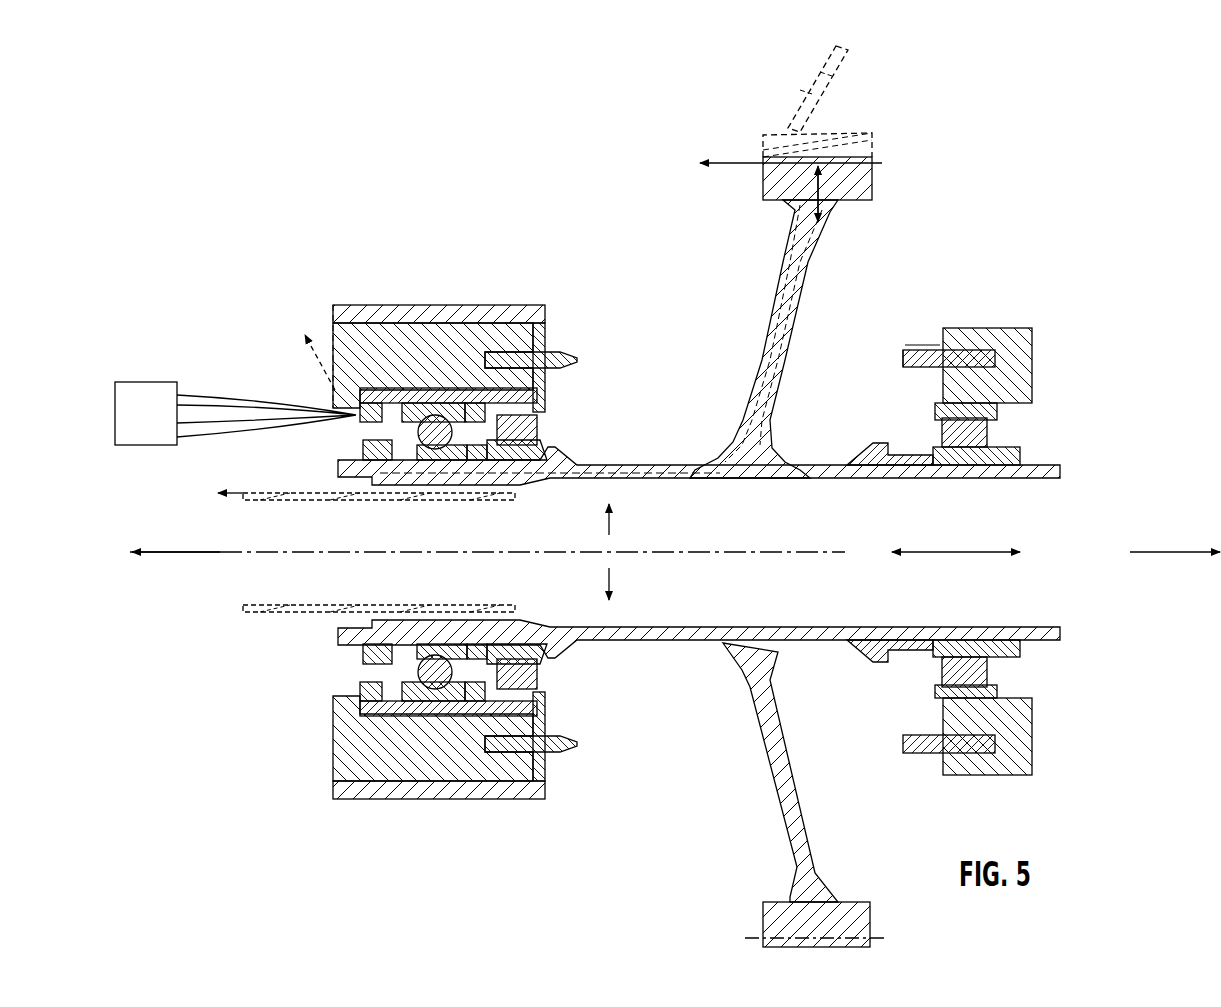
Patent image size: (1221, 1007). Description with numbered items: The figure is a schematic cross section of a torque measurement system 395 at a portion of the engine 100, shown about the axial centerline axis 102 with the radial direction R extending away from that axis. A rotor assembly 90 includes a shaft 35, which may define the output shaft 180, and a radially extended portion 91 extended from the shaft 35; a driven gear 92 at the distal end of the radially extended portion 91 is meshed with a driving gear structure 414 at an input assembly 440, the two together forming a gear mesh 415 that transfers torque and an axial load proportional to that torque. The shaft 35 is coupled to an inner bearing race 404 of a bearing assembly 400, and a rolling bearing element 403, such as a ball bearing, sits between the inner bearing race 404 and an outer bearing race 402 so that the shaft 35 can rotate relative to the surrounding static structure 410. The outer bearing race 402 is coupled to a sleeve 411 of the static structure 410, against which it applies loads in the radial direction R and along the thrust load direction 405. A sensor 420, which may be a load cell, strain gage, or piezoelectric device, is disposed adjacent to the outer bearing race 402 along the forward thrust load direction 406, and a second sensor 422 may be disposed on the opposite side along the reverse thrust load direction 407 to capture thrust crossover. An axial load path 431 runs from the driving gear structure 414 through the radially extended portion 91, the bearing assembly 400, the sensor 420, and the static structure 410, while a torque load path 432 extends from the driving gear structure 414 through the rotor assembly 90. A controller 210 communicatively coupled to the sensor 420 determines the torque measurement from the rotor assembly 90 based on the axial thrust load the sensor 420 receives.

The engine 100 is at (893, 57).
The axial centerline axis 102 is at (318, 550).
The shaft 35 is at (652, 622).
The rotor assembly 90 is at (775, 503).
The radially extended portion 91 is at (773, 320).
The driven gear 92 is at (878, 178).
The output shaft 180 is at (254, 605).
The controller 210 is at (127, 426).
The torque measurement system 395 is at (237, 338).
The bearing assembly 400 is at (300, 645).
The outer bearing race 402 is at (410, 702).
The rolling bearing element 403 is at (417, 430).
The inner bearing race 404 is at (446, 648).
The thrust load direction 405 is at (960, 550).
The forward thrust load direction 406 is at (168, 556).
The reverse thrust load direction 407 is at (1178, 554).
The static structure 410 is at (368, 335).
The sleeve 411 is at (368, 697).
The driving gear structure 414 is at (878, 157).
The gear mesh 415 is at (752, 155).
The sensor 420 is at (392, 687).
The second sensor 422 is at (538, 672).
The axial load path 431 is at (314, 345).
The torque load path 432 is at (243, 496).
The input assembly 440 is at (815, 110).
The radial direction R is at (610, 520).